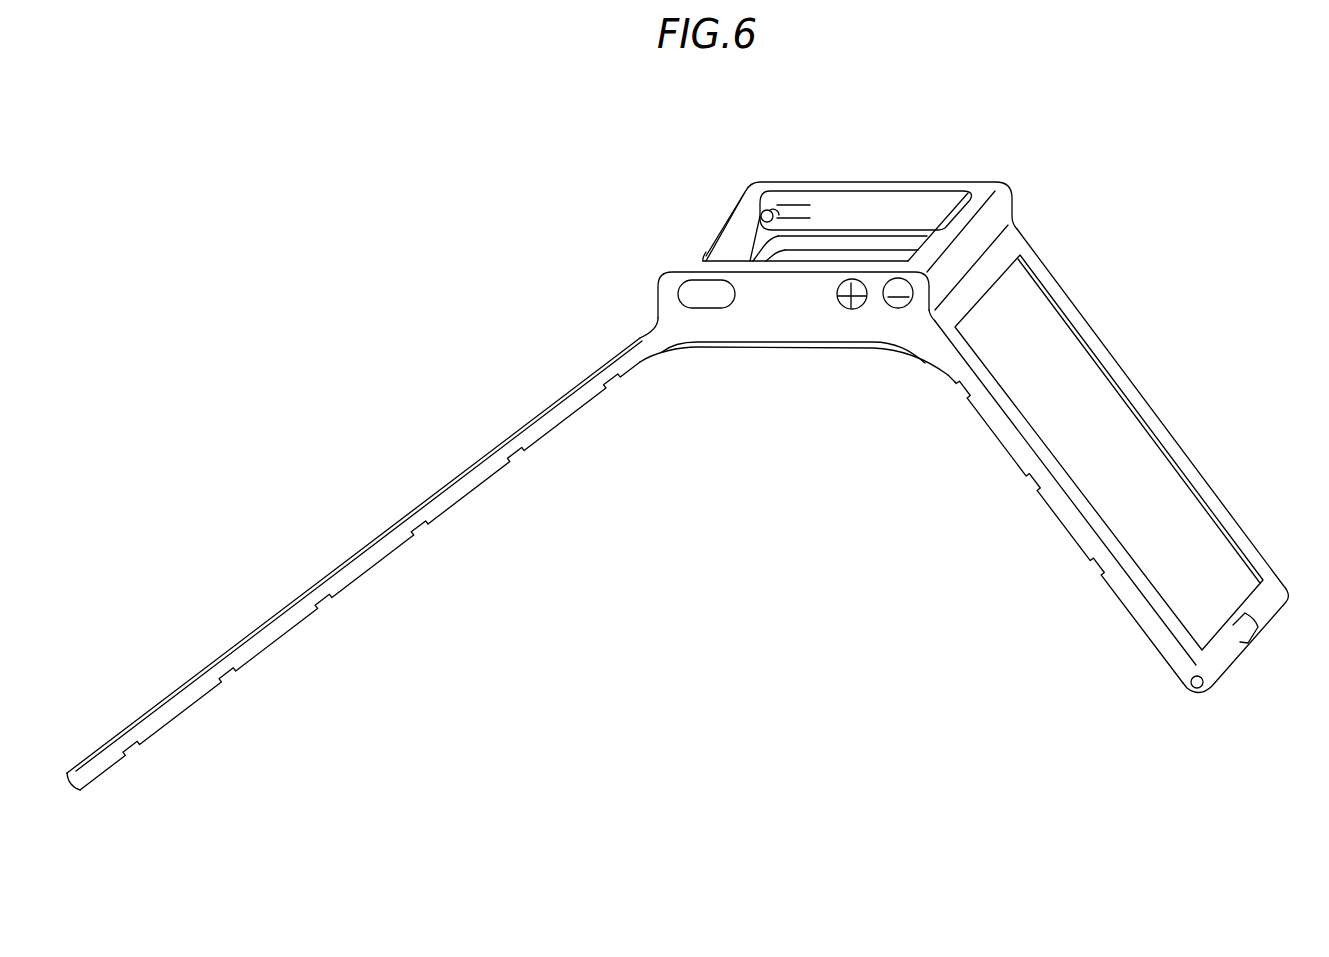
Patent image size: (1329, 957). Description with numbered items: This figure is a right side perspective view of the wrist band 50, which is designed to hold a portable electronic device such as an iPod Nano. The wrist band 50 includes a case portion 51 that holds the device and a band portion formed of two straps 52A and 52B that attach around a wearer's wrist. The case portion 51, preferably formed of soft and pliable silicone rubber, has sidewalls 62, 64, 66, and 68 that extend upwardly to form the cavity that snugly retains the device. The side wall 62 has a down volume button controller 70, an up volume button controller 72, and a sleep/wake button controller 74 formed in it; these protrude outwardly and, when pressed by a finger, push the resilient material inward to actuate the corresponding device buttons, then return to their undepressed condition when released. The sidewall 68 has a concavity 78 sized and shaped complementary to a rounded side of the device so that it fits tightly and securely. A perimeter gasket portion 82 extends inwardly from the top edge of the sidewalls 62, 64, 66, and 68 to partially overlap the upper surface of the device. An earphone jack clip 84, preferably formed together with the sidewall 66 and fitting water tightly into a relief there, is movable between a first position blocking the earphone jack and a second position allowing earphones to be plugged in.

The wrist band 50 is at (713, 510).
The case portion 51 is at (625, 295).
The strap 52A is at (262, 638).
The strap 52B is at (1148, 491).
The side wall 62 is at (802, 310).
The sidewall 64 is at (690, 246).
The sidewall 66 is at (884, 181).
The sidewall 68 is at (982, 225).
The down volume button controller 70 is at (899, 310).
The up volume button controller 72 is at (853, 312).
The sleep/wake button controller 74 is at (712, 298).
The concavity 78 is at (733, 248).
The perimeter gasket portion 82 is at (945, 214).
The earphone jack clip 84 is at (790, 203).